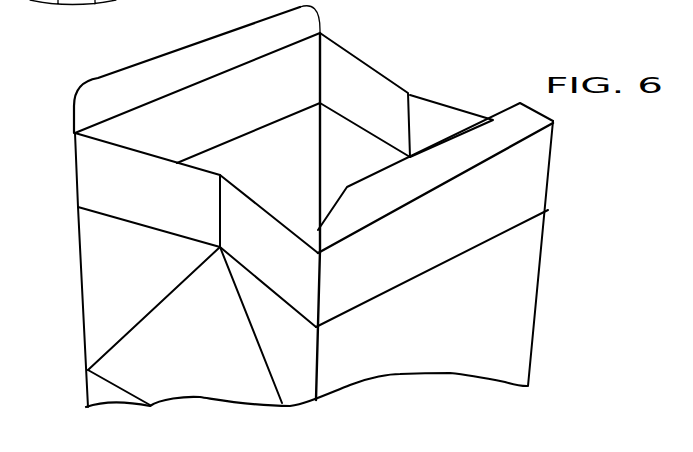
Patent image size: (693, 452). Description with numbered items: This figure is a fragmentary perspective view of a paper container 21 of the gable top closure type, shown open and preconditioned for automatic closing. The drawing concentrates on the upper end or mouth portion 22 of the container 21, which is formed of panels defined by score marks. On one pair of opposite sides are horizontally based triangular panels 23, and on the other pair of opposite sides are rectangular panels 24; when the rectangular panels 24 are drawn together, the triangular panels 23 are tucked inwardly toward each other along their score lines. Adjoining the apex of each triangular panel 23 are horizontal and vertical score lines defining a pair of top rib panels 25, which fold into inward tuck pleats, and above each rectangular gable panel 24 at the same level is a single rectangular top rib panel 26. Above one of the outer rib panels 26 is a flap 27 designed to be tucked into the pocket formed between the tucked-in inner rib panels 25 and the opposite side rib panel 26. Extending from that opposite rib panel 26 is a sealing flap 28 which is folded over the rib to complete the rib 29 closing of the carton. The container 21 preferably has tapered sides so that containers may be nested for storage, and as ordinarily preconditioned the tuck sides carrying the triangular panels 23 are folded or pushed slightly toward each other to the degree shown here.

The container 21 is at (561, 270).
The upper end or mouth portion 22 is at (403, 70).
The triangular panel 23 is at (182, 357).
The rectangular panel 24 is at (267, 177).
The top rib panel 25 is at (125, 202).
The rectangular top rib panel 26 is at (214, 122).
The flap 27 is at (427, 175).
The sealing flap 28 is at (177, 77).
The rib 29 is at (112, 270).